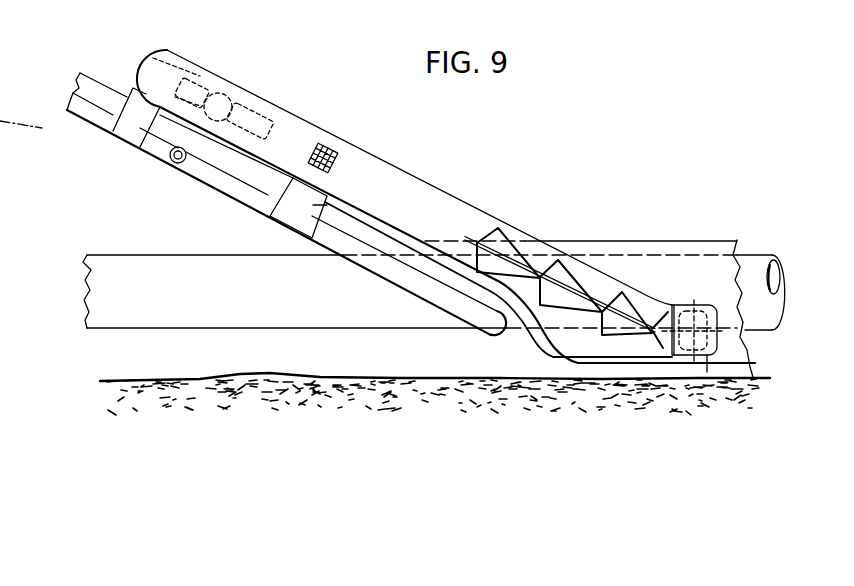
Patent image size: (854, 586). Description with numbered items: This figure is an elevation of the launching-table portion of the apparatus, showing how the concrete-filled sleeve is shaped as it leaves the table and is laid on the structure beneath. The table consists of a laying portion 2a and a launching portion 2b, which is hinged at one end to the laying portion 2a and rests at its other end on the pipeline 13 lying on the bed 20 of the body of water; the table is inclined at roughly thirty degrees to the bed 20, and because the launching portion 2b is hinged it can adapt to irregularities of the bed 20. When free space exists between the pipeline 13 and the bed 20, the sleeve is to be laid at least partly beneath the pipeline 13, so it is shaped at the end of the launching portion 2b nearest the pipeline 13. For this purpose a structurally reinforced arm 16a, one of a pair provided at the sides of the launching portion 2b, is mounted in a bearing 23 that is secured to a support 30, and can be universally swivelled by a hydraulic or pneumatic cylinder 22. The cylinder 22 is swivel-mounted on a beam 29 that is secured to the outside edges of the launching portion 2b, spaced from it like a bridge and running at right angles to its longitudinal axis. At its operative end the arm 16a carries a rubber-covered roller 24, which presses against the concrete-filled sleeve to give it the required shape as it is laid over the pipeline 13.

The laying portion 2a is at (92, 116).
The launching portion 2b is at (233, 190).
The pipeline 13 is at (110, 263).
The arm 16a is at (432, 197).
The bed 20 is at (435, 408).
The hydraulic or pneumatic cylinder 22 is at (234, 83).
The bearing 23 is at (331, 140).
The rubber-covered roller 24 is at (706, 377).
The beam 29 is at (155, 67).
The support 30 is at (330, 203).